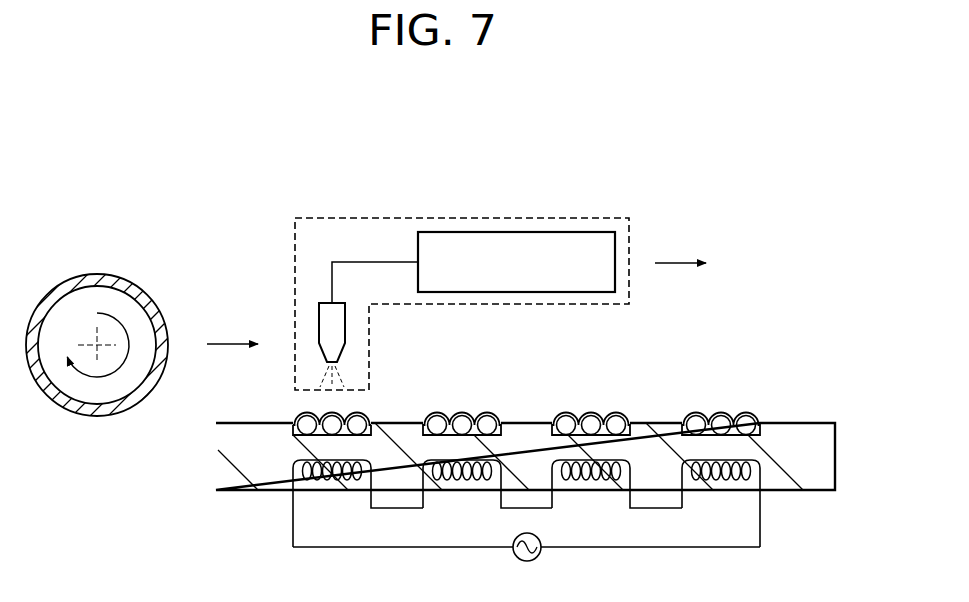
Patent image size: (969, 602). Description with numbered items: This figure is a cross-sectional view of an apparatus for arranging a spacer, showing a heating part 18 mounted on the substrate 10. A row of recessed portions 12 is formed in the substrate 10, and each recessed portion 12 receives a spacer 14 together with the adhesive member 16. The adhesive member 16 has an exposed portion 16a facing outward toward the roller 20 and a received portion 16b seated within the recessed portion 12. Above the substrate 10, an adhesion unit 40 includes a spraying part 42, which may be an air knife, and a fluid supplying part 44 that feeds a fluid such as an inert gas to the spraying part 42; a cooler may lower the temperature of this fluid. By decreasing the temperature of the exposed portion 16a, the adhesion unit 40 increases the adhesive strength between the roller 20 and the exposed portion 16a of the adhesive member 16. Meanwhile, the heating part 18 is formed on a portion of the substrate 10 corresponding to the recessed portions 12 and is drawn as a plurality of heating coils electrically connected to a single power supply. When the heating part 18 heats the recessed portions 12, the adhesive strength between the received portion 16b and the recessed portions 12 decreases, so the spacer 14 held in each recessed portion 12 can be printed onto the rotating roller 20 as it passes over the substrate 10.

The substrate 10 is at (268, 470).
The recessed portion 12 is at (742, 437).
The spacer 14 is at (742, 416).
The adhesive member 16 is at (712, 412).
The exposed portion 16a is at (293, 423).
The received portion 16b is at (293, 431).
The heating part 18 is at (593, 548).
The roller 20 is at (158, 275).
The adhesion unit 40 is at (507, 218).
The spraying part 42 is at (346, 325).
The fluid supplying part 44 is at (553, 232).